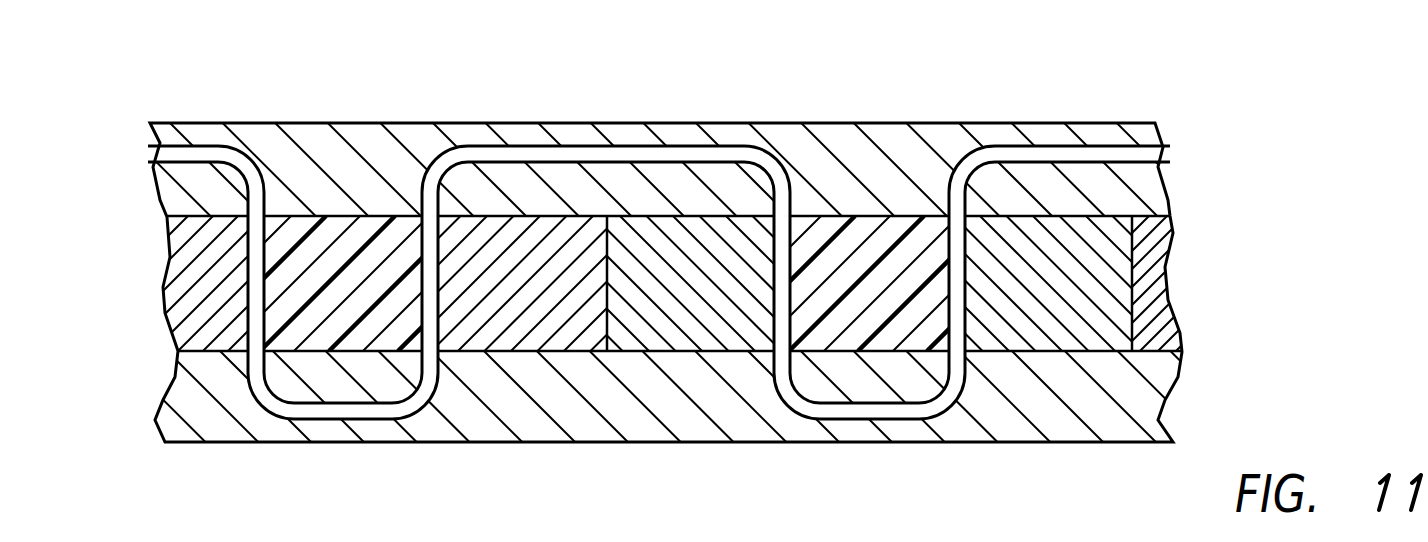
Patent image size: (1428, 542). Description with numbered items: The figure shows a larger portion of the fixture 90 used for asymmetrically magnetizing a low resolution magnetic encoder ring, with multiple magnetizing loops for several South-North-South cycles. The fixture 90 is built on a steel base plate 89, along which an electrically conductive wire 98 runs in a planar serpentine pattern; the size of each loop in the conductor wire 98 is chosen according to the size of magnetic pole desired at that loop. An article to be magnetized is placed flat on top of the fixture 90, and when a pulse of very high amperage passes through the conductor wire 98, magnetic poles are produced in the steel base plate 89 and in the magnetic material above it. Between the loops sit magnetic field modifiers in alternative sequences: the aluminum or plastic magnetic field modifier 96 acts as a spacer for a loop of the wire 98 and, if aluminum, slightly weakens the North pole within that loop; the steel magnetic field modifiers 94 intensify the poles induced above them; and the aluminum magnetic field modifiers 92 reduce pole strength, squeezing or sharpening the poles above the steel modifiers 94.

The steel base plate 89 is at (360, 168).
The fixture 90 is at (150, 88).
The aluminum magnetic field modifier 92 is at (534, 288).
The steel magnetic field modifier 94 is at (705, 288).
The aluminum or plastic magnetic field modifier 96 is at (360, 287).
The electrically conductive wire 98 is at (317, 412).